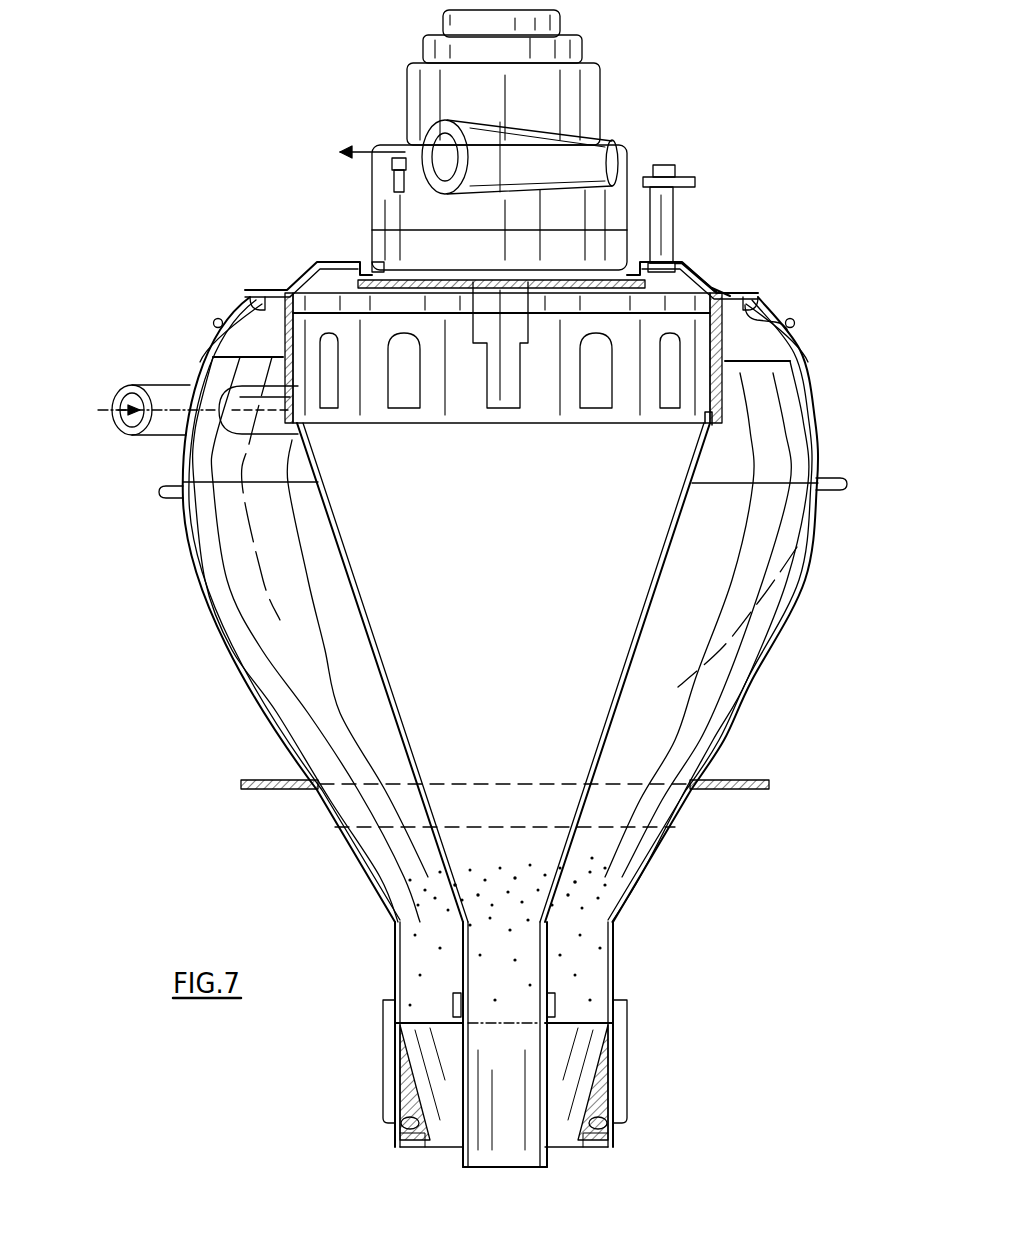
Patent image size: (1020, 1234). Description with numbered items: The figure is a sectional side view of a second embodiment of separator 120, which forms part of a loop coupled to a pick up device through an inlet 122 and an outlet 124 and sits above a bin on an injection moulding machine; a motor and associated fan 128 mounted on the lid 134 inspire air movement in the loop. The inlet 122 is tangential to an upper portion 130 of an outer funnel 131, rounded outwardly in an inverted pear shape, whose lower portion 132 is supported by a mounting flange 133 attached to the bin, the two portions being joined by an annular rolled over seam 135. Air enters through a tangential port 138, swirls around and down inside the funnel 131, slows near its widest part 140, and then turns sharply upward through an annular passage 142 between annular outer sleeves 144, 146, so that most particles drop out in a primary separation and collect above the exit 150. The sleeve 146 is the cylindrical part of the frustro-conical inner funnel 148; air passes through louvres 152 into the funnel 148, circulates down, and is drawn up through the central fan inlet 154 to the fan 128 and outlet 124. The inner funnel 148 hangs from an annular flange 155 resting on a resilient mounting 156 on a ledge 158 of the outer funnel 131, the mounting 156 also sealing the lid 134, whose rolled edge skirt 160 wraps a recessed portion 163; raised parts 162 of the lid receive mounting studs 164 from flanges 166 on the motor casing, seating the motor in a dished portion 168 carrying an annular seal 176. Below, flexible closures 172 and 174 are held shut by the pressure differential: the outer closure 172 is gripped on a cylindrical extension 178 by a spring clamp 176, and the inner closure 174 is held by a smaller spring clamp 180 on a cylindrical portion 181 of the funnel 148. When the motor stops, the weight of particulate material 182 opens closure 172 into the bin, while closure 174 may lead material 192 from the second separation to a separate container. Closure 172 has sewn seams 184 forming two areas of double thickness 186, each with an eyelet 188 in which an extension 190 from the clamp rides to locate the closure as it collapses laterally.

The separator 120 is at (190, 633).
The inlet 122 is at (160, 384).
The outlet 124 is at (428, 135).
The motor and associated fan 128 is at (615, 110).
The upper portion 130 is at (215, 358).
The outer funnel 131 is at (184, 552).
The lower portion 132 is at (262, 712).
The mounting flange 133 is at (265, 790).
The lid 134 is at (700, 282).
The annular rolled over seam 135 is at (843, 480).
The tangential port 138 is at (230, 416).
The widest part 140 is at (818, 432).
The annular passage 142 is at (712, 428).
The annular outer sleeve 144 is at (722, 392).
The sleeve 146 is at (772, 330).
The inner funnel 148 is at (668, 571).
The exit 150 is at (618, 1049).
The louvres 152 is at (400, 346).
The fan inlet 154 is at (473, 330).
The annular flange 155 is at (732, 288).
The resilient mounting 156 is at (758, 294).
The ledge 158 is at (272, 290).
The outer rolled edge skirt 160 is at (246, 297).
The raised parts 162 is at (673, 270).
The recessed portion 163 is at (216, 320).
The mounting studs 164 is at (676, 200).
The flanges 166 is at (678, 170).
The central dished portion 168 is at (376, 270).
The outer closure 172 is at (381, 1168).
The inner closure 174 is at (469, 1168).
The spring clamp 176 is at (380, 262).
The cylindrical extension 178 is at (613, 963).
The smaller spring clamp 180 is at (452, 996).
The cylindrical portion 181 is at (548, 950).
The particulate material 182 is at (614, 892).
The seams 184 is at (398, 1073).
The areas of double thickness 186 is at (398, 1144).
The eyelet 188 is at (398, 1124).
The extension 190 is at (383, 1026).
The material 192 is at (440, 886).